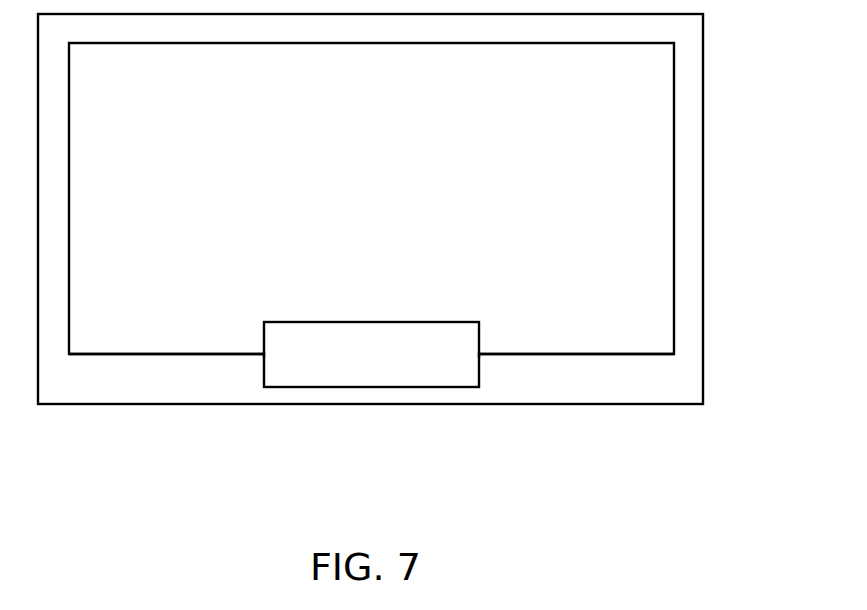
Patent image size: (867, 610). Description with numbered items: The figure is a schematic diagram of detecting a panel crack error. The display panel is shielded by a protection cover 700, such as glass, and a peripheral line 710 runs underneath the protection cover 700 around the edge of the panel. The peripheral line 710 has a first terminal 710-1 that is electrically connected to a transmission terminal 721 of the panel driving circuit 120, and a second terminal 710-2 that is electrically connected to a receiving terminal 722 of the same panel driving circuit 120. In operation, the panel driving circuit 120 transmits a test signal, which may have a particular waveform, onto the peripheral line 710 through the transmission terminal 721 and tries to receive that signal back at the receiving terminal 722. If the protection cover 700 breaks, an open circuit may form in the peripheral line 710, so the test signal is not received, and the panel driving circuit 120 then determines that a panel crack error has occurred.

The protection cover 700 is at (630, 404).
The peripheral line 710 is at (674, 225).
The first terminal 710-1 is at (522, 352).
The second terminal 710-2 is at (203, 352).
The panel driving circuit 120 is at (392, 369).
The transmission terminal 721 is at (480, 355).
The receiving terminal 722 is at (263, 355).